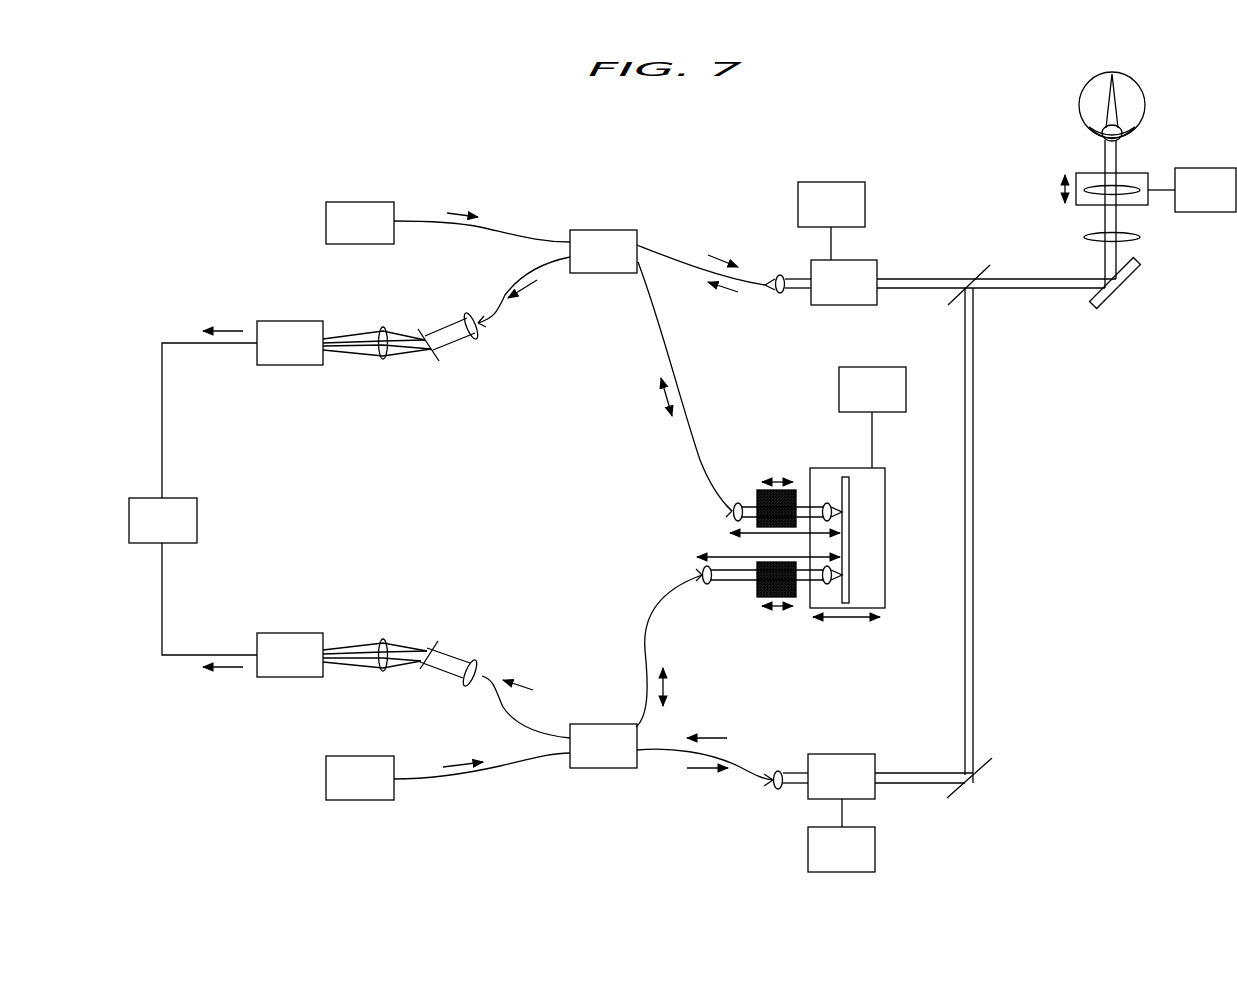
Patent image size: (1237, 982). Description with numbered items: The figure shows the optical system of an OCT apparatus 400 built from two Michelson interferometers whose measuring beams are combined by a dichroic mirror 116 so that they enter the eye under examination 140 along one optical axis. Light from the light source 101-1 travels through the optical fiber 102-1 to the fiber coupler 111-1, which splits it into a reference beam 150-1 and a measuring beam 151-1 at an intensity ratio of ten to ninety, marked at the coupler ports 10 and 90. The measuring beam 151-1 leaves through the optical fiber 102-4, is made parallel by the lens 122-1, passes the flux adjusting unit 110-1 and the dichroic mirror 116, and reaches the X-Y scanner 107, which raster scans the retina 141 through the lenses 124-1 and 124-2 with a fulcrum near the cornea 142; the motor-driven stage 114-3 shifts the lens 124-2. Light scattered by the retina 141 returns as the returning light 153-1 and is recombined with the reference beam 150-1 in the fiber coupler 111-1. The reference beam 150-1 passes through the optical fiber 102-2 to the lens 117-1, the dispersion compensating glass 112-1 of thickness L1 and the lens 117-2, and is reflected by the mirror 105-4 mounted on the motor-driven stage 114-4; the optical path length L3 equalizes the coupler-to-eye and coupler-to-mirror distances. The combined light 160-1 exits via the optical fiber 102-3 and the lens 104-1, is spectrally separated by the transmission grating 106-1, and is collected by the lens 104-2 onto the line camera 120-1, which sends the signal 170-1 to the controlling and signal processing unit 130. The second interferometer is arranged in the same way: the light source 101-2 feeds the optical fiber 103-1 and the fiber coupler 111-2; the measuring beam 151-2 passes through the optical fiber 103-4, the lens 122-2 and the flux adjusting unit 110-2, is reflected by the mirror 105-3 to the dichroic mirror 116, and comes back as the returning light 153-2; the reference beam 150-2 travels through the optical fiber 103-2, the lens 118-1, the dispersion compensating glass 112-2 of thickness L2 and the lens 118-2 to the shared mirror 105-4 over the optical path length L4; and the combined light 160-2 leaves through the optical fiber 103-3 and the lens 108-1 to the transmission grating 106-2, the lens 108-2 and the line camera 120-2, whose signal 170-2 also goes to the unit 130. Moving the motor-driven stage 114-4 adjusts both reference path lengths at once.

The OCT apparatus 400 is at (305, 147).
The light source 101-1 is at (360, 223).
The light source 101-2 is at (360, 778).
The optical fiber 102-1 is at (498, 226).
The optical fiber 102-2 is at (687, 442).
The optical fiber 102-3 is at (555, 262).
The optical fiber 102-4 is at (673, 256).
The optical fiber 103-1 is at (493, 773).
The optical fiber 103-2 is at (643, 612).
The optical fiber 103-3 is at (547, 733).
The optical fiber 103-4 is at (671, 752).
The lens 104-1 is at (472, 315).
The lens 104-2 is at (383, 326).
The mirror 105-3 is at (990, 774).
The mirror 105-4 is at (849, 580).
The transmission grating 106-1 is at (421, 330).
The transmission grating 106-2 is at (432, 640).
The X-Y scanner 107 is at (1125, 284).
The lens 108-1 is at (468, 685).
The lens 108-2 is at (383, 672).
The flux adjusting unit 110-1 is at (831, 282).
The flux adjusting unit 110-2 is at (829, 776).
The fiber coupler 111-1 is at (603, 251).
The fiber coupler 111-2 is at (603, 746).
The dispersion compensating glass 112-1 is at (760, 489).
The dispersion compensating glass 112-2 is at (758, 598).
The motor-driven stage 114-3 is at (1076, 174).
The motor-driven stage 114-4 is at (886, 498).
The dichroic mirror 116 is at (985, 268).
The lens 117-1 is at (736, 503).
The lens 117-2 is at (826, 503).
The lens 118-1 is at (706, 586).
The lens 118-2 is at (828, 585).
The line camera 120-1 is at (290, 343).
The line camera 120-2 is at (290, 655).
The lens 122-1 is at (780, 294).
The lens 122-2 is at (779, 770).
The lens 124-1 is at (1083, 237).
The lens 124-2 is at (1060, 190).
The controlling and signal processing unit 130 is at (682, 520).
The eye under examination 140 is at (1082, 100).
The retina 141 is at (1109, 72).
The cornea 142 is at (1120, 146).
The reference beam 150-1 is at (634, 397).
The reference beam 150-2 is at (694, 687).
The measuring beam 151-1 is at (735, 249).
The measuring beam 151-2 is at (710, 783).
The returning light 153-1 is at (713, 300).
The returning light 153-2 is at (711, 724).
The combined light 160-1 is at (536, 300).
The combined light 160-2 is at (517, 671).
The signal 170-1 is at (214, 315).
The signal 170-2 is at (214, 685).
The ninety percent split portion 90 is at (655, 497).
The ten percent split portion 10 is at (635, 502).
The thickness of dispersion compensating glass L1 is at (777, 467).
The thickness of dispersion compensating glass L2 is at (782, 619).
The optical path length L3 is at (733, 533).
The optical path length L4 is at (753, 557).